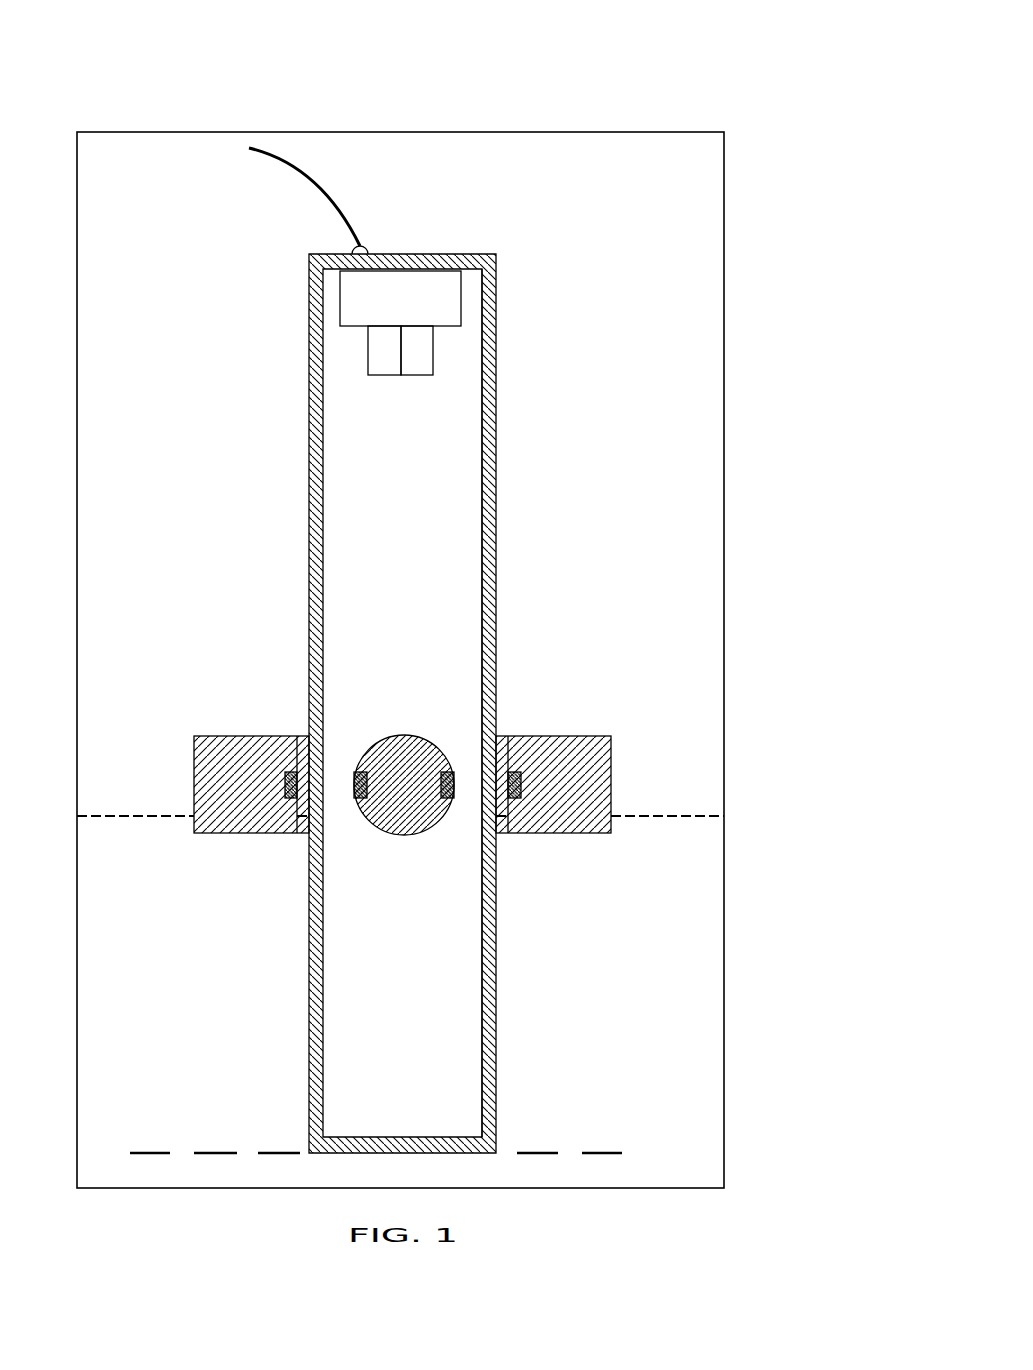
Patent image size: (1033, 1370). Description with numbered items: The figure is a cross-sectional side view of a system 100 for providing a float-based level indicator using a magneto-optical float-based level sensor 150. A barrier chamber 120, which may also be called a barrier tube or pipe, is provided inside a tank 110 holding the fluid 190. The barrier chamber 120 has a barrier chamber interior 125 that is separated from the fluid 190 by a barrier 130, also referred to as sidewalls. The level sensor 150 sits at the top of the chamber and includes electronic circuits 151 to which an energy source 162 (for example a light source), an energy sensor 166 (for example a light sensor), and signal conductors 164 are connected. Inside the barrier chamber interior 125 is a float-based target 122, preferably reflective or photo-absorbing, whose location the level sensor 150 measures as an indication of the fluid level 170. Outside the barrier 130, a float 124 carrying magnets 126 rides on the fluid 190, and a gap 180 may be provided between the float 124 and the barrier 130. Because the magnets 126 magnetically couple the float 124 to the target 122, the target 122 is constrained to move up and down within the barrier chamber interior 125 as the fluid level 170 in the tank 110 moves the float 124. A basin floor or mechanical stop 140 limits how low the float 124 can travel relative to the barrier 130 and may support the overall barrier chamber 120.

The system 100 is at (562, 78).
The tank 110 is at (724, 170).
The barrier chamber 120 is at (303, 1018).
The target 122 is at (422, 735).
The float 124 is at (266, 736).
The barrier chamber interior 125 is at (420, 1088).
The magnet 126 is at (552, 892).
The barrier 130 is at (497, 987).
The stop 140 is at (610, 1122).
The level sensor 150 is at (471, 305).
The electronic circuits 151 is at (357, 293).
The energy source 162 is at (378, 360).
The signal conductors 164 is at (337, 207).
The energy sensor 166 is at (425, 360).
The fluid level 170 is at (683, 816).
The gap 180 is at (502, 743).
The fluid 190 is at (690, 942).